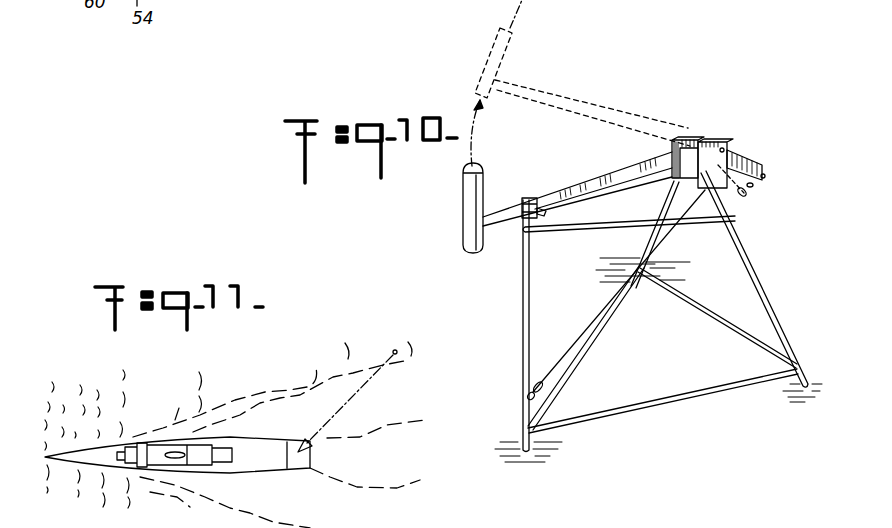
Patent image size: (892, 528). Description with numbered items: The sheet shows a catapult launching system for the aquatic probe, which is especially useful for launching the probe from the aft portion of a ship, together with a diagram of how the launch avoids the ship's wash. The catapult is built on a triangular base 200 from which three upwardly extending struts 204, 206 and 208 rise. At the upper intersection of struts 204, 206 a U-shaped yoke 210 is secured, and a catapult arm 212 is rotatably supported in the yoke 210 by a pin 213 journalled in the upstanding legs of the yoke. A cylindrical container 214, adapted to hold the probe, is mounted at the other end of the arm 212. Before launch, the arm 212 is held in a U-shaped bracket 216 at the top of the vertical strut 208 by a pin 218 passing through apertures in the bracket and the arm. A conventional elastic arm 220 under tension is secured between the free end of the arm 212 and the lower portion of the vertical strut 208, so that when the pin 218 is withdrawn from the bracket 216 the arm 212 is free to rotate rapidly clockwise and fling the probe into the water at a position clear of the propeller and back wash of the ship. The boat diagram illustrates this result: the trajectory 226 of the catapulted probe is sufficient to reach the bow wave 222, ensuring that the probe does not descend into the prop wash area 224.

In FIG. 10, the triangular base 200 is at (639, 404).
In FIG. 10, the strut 204 is at (756, 268).
In FIG. 10, the strut 206 is at (650, 240).
In FIG. 10, the vertical strut 208 is at (529, 302).
In FIG. 10, the U-shaped yoke 210 is at (727, 150).
In FIG. 10, the catapult arm 212 is at (615, 176).
In FIG. 10, the pin 213 is at (717, 142).
In FIG. 10, the cylindrical container 214 is at (462, 214).
In FIG. 10, the U-shaped bracket 216 is at (523, 198).
In FIG. 10, the pin 218 is at (545, 211).
In FIG. 10, the elastic arm 220 is at (612, 308).
In FIG. 11, the bow wave 222 is at (314, 348).
In FIG. 11, the prop wash area 224 is at (395, 464).
In FIG. 11, the trajectory 226 is at (353, 398).